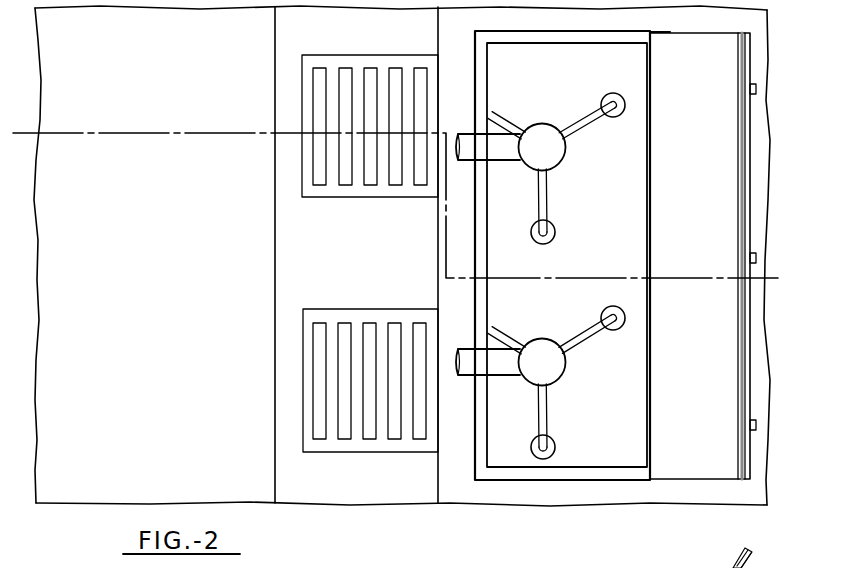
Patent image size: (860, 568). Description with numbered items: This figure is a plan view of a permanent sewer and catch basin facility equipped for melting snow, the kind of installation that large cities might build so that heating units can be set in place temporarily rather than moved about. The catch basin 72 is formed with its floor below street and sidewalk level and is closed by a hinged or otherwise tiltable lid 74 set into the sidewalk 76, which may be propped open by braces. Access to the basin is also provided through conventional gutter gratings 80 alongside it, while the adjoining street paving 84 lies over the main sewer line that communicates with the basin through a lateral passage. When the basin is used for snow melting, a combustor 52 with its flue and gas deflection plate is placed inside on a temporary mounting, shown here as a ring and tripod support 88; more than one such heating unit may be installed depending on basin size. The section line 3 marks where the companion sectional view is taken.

The section line 3- 3 is at (13, 140).
The combustor 52 is at (556, 156).
The catch basin 72 is at (614, 396).
The tiltable lid 74 is at (672, 193).
The sidewalk 76 is at (527, 495).
The gutter gratings 80 is at (358, 71).
The street paving 84 is at (147, 396).
The ring and tripod support 88 is at (549, 207).